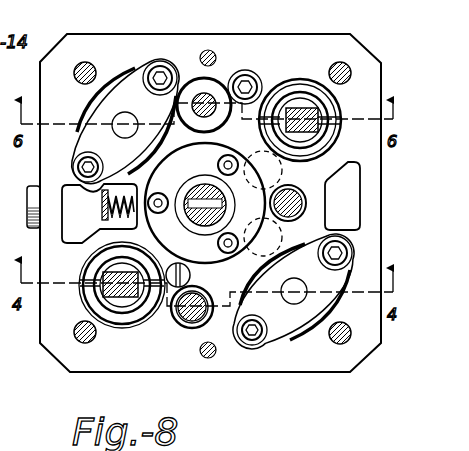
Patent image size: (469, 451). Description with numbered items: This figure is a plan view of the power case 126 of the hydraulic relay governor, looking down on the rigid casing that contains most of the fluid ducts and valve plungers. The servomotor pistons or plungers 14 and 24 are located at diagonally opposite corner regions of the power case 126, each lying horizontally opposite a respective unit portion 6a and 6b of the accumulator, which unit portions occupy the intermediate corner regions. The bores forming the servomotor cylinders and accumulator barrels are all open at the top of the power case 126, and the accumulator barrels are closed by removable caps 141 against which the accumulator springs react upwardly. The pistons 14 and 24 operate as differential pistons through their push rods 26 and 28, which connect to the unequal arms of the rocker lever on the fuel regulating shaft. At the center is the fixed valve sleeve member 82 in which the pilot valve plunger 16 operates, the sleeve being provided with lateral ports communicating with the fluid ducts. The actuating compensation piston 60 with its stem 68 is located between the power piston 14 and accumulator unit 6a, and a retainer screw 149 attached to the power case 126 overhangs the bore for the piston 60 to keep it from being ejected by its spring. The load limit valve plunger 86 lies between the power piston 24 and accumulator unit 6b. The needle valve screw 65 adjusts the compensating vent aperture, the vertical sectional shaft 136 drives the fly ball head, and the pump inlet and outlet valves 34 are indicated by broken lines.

The power case 126 is at (238, 372).
The accumulator unit portion 6a is at (120, 76).
The accumulator unit portion 6b is at (285, 341).
The removable cap 141 is at (133, 158).
The actuating compensation piston 60 is at (218, 124).
The stem 68 is at (199, 93).
The retainer screw 149 is at (258, 55).
The piston 14 is at (293, 92).
The push rod 26 is at (320, 112).
The valve sleeve member 82 is at (210, 186).
The pilot valve plunger 16 is at (200, 216).
The pin 34 is at (267, 168).
The vertical sectional shaft 136 is at (292, 203).
The needle valve screw 65 is at (102, 222).
The piston 24 is at (122, 312).
The push rod 28 is at (104, 290).
The load limit valve plunger 86 is at (188, 326).